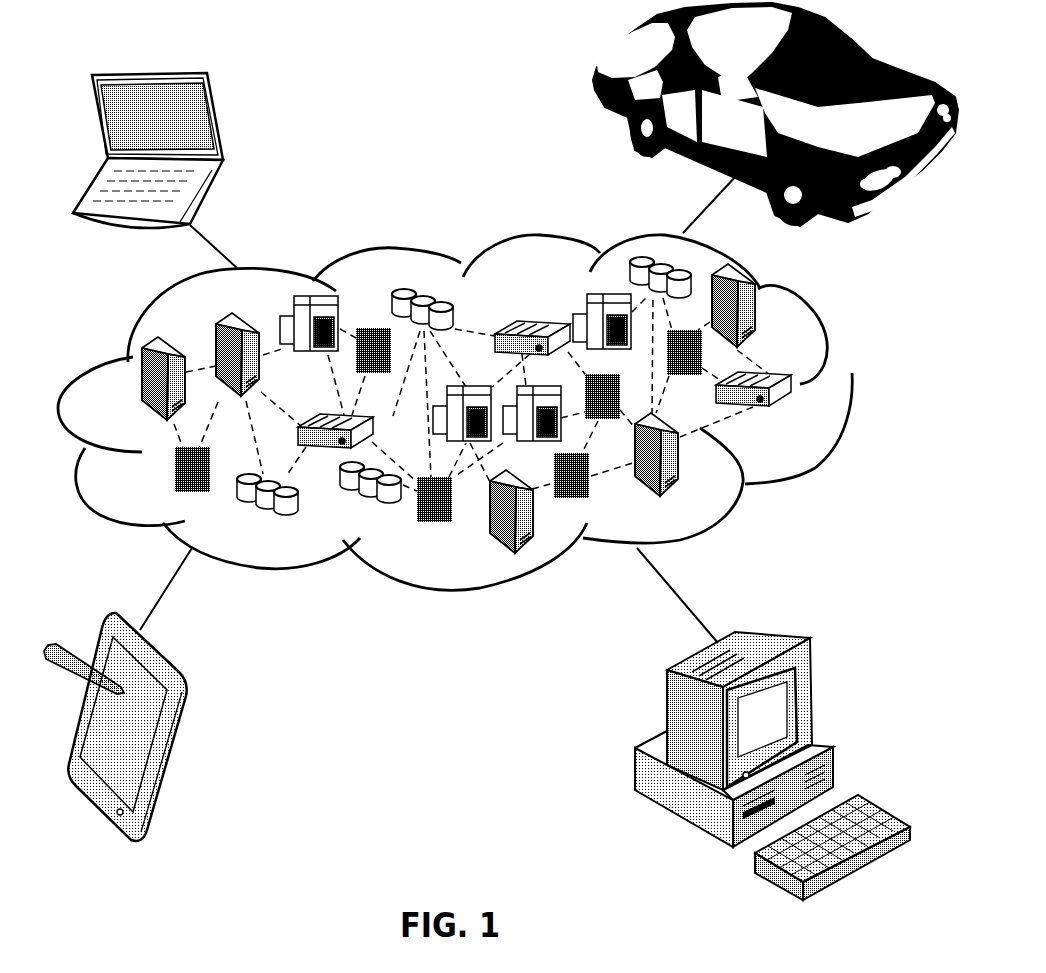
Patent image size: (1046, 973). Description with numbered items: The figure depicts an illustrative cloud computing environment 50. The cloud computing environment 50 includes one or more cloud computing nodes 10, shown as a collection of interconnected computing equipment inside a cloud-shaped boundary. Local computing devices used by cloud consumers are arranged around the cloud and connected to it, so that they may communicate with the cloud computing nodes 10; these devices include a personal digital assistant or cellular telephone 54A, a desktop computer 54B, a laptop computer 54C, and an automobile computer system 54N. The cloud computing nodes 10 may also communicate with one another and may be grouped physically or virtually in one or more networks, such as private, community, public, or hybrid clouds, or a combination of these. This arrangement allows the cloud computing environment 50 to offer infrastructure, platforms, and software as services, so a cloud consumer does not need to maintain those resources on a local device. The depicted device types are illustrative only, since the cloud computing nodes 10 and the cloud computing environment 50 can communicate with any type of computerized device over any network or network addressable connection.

The cloud computing nodes 10 is at (808, 424).
The cloud computing environment 50 is at (850, 388).
The personal digital assistant (PDA) or cellular telephone 54A is at (183, 720).
The desktop computer 54B is at (785, 628).
The laptop computer 54C is at (221, 120).
The automobile computer system 54N is at (593, 84).